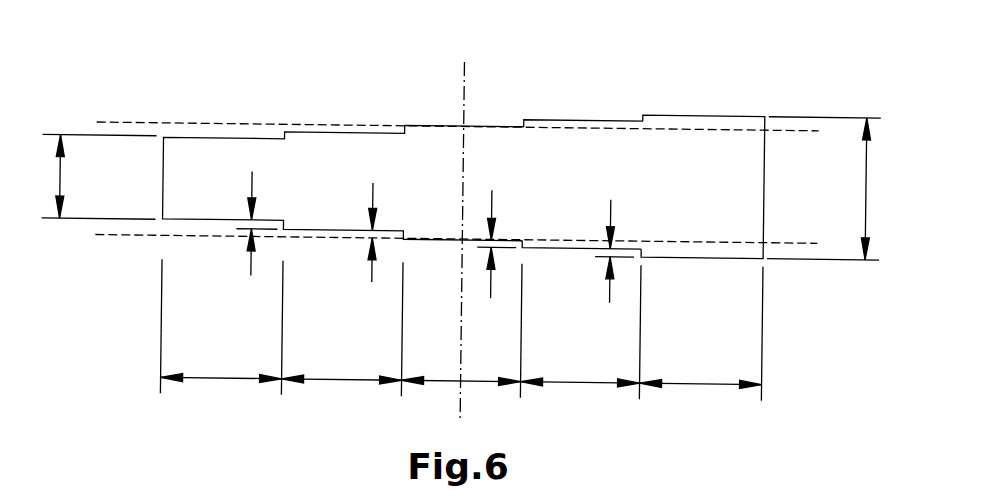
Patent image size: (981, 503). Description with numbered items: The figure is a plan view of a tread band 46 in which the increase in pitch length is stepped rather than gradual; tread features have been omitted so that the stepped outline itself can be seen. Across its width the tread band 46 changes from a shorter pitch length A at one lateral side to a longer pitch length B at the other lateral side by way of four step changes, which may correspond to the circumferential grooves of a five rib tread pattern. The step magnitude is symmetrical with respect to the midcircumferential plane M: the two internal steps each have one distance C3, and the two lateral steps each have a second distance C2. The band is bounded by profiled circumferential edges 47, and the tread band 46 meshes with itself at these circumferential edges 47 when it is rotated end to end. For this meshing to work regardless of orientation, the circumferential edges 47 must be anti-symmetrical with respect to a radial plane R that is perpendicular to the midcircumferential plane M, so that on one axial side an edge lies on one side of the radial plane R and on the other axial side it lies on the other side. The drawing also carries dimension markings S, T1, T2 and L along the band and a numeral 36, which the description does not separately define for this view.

The shaft body 36 is at (404, 126).
The tread band 46 is at (716, 136).
The circumferential edges 47 is at (552, 112).
The midcircumferential plane M is at (465, 93).
The shorter pitch length A is at (95, 176).
The longer pitch length B is at (829, 188).
The radial plane R is at (795, 127).
The length S is at (221, 367).
The length T1 is at (461, 369).
The length T2 is at (461, 370).
The length L is at (701, 373).
The second distance C2 is at (435, 251).
The first distance C3 is at (439, 254).